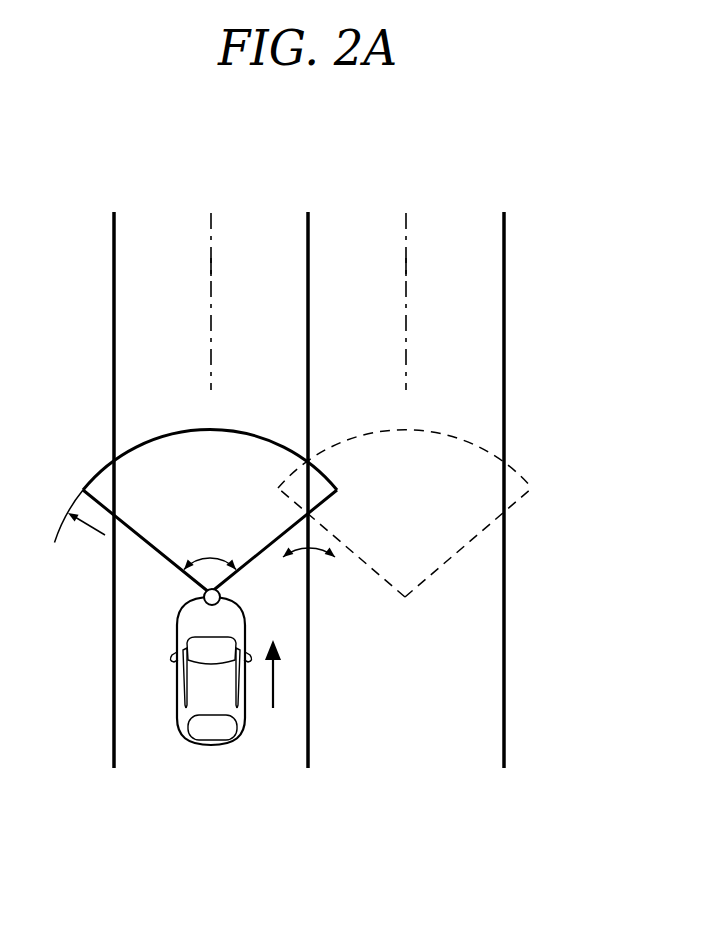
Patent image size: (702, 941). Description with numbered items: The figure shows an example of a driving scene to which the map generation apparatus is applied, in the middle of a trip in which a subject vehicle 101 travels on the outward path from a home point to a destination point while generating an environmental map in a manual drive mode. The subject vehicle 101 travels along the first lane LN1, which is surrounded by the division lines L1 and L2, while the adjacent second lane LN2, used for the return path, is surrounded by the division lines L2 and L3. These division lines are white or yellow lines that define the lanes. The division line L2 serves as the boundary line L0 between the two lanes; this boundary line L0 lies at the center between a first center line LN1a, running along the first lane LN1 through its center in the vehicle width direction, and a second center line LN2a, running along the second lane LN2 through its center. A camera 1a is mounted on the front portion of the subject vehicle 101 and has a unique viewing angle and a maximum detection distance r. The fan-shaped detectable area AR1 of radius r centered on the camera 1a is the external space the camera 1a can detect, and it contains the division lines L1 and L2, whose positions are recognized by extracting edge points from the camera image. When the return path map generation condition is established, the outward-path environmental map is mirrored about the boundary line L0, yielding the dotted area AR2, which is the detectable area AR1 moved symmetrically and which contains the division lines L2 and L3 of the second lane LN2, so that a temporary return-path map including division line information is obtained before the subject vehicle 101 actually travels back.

The division line L1 is at (113, 475).
The division line L2 is at (308, 475).
The division line L3 is at (504, 475).
The boundary line L0 is at (308, 789).
The first lane LN1 is at (140, 333).
The second lane LN2 is at (478, 333).
The first center line LN1a is at (211, 267).
The second center line LN2a is at (407, 267).
The detectable area AR1 is at (178, 448).
The area AR2 is at (446, 450).
The maximum detection distance r is at (80, 523).
The subject vehicle 101 is at (175, 682).
The camera 1a is at (204, 595).